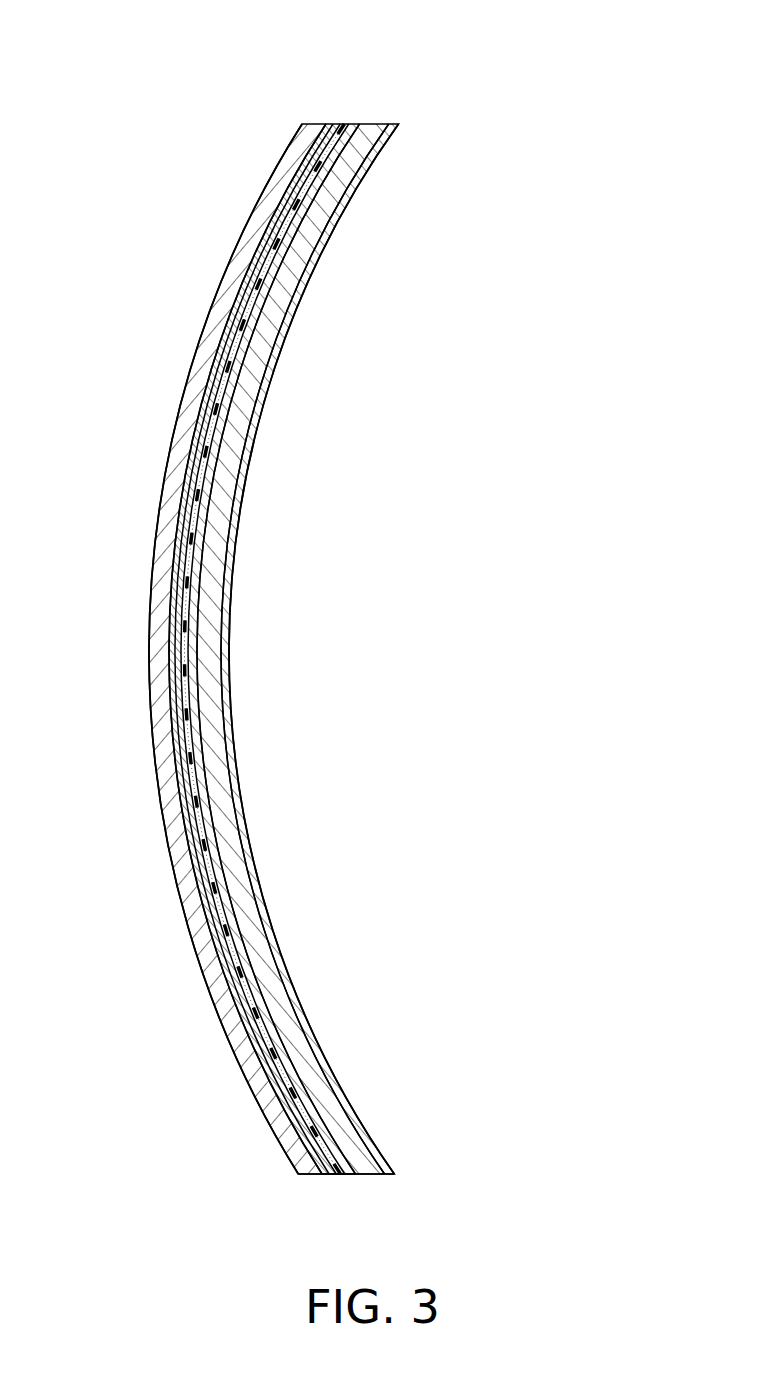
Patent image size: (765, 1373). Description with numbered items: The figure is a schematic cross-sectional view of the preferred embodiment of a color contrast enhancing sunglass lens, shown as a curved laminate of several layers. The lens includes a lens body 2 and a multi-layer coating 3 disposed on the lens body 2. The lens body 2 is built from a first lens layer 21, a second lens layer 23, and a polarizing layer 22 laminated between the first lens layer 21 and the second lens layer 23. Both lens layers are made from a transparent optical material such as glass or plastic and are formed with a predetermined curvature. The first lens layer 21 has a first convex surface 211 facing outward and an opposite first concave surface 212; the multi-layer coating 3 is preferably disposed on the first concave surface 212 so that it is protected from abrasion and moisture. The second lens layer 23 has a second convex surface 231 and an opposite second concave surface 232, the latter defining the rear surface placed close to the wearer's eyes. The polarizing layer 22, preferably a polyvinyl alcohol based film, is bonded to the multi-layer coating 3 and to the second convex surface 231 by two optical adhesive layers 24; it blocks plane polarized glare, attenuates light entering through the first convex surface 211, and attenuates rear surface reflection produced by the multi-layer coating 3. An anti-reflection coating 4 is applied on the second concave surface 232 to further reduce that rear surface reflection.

The lens body 2 is at (455, 55).
The first lens layer 21 is at (304, 139).
The first convex surface 211 is at (150, 628).
The first concave surface 212 is at (168, 800).
The polarizing layer 22 is at (346, 142).
The second lens layer 23 is at (372, 134).
The second convex surface 231 is at (333, 1140).
The second concave surface 232 is at (317, 1057).
The optical adhesive layers 24 is at (355, 1177).
The multi-layer coating 3 is at (283, 1097).
The anti-reflection coating 4 is at (388, 1170).